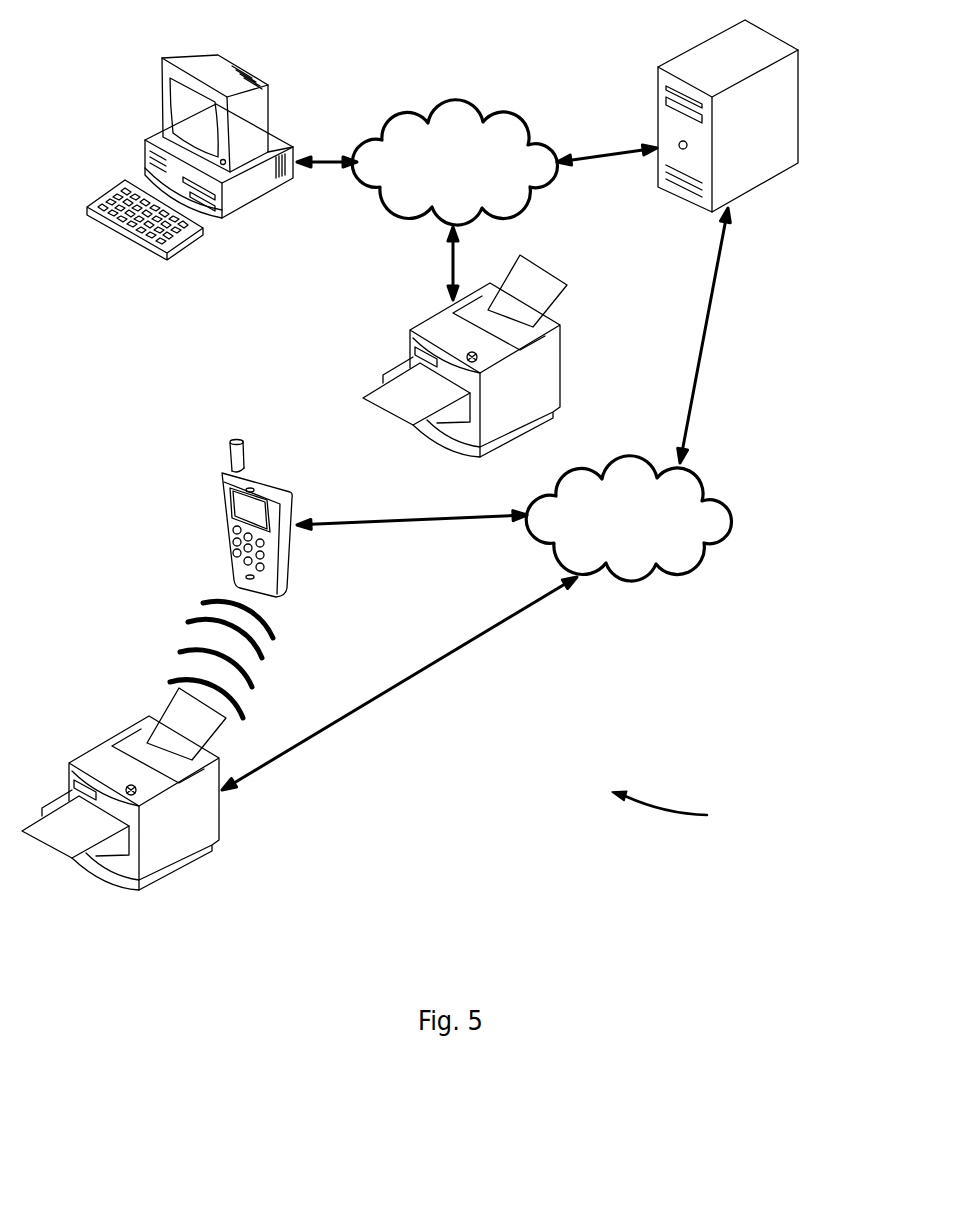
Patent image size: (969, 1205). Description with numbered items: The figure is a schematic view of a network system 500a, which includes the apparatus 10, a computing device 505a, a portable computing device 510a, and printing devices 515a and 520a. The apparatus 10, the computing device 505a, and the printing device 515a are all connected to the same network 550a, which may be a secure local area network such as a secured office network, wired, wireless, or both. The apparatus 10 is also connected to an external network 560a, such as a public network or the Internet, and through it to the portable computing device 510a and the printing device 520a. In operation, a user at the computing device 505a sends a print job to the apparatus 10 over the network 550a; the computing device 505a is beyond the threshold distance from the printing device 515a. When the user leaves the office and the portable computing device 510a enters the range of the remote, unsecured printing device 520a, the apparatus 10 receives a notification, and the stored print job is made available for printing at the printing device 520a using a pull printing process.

The computing device 505a is at (150, 137).
The apparatus 10 is at (658, 120).
The network 550a is at (454, 162).
The external network 560a is at (628, 518).
The printing device 515a is at (408, 338).
The printing device 520a is at (200, 857).
The portable computing device 510a is at (220, 548).
The network system 500a is at (689, 814).